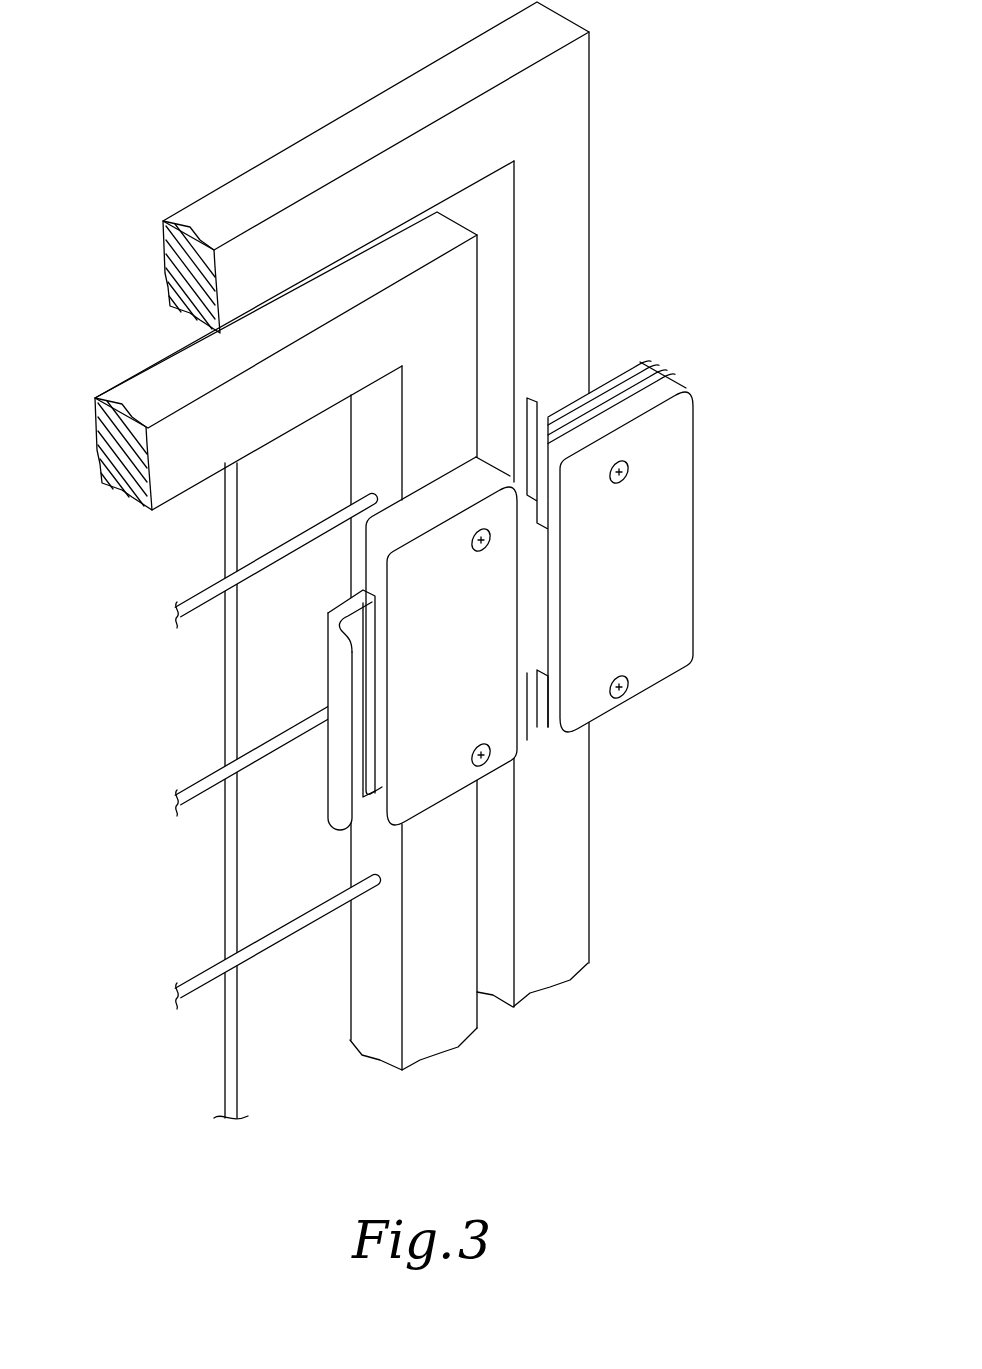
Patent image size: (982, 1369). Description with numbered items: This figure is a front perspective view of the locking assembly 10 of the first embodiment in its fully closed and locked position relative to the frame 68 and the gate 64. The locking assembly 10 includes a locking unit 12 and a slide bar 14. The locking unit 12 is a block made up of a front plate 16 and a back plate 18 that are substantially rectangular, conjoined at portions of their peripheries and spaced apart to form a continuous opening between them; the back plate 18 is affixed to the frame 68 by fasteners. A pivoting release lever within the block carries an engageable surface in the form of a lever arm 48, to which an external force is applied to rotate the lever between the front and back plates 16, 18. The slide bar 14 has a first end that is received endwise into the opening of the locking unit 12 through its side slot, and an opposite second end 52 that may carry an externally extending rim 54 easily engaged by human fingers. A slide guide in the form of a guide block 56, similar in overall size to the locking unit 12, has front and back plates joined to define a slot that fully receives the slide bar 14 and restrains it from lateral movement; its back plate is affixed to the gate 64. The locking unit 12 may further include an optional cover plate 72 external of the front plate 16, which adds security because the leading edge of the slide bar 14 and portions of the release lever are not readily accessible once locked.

The locking assembly 10 is at (683, 546).
The locking unit 12 is at (673, 565).
The slide bar 14 is at (586, 554).
The front plate 16 is at (658, 386).
The back plate 18 is at (624, 363).
The lever arm 48 is at (543, 405).
The second end 52 is at (300, 787).
The externally extending rim 54 is at (335, 673).
The guide block 56 is at (428, 777).
The gate 64 is at (150, 382).
The frame 68 is at (568, 194).
The cover plate 72 is at (662, 662).